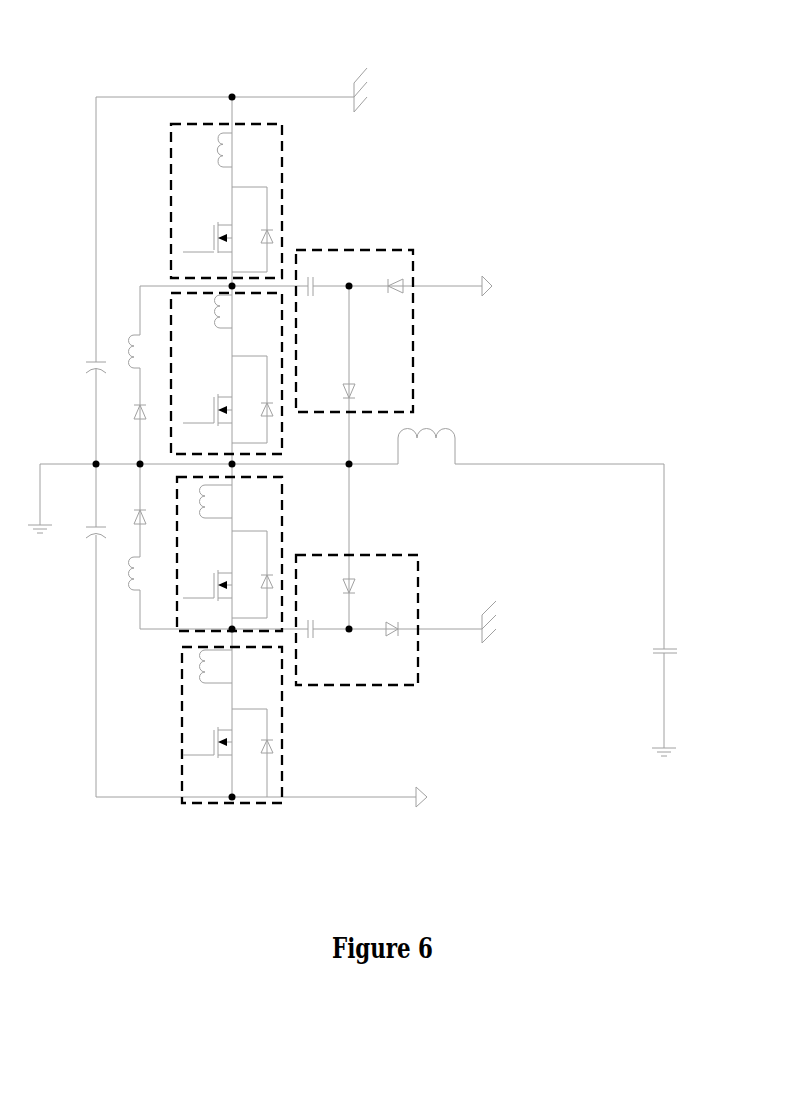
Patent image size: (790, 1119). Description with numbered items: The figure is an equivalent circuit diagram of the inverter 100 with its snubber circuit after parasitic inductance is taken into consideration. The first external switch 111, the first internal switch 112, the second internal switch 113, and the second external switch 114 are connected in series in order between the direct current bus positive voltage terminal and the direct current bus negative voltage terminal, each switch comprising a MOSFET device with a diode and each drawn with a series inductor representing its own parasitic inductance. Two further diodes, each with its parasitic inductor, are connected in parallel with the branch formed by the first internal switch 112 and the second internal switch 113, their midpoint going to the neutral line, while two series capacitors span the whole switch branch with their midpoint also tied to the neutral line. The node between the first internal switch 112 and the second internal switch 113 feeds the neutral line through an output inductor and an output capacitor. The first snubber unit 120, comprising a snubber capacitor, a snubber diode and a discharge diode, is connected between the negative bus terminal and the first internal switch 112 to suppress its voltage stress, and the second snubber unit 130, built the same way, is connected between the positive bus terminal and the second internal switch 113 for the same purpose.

The inverter 100 is at (722, 35).
The first external switch 111 is at (284, 161).
The first internal switch 112 is at (169, 316).
The second internal switch 113 is at (175, 631).
The second external switch 114 is at (284, 726).
The first snubber unit 120 is at (414, 260).
The second snubber unit 130 is at (420, 666).